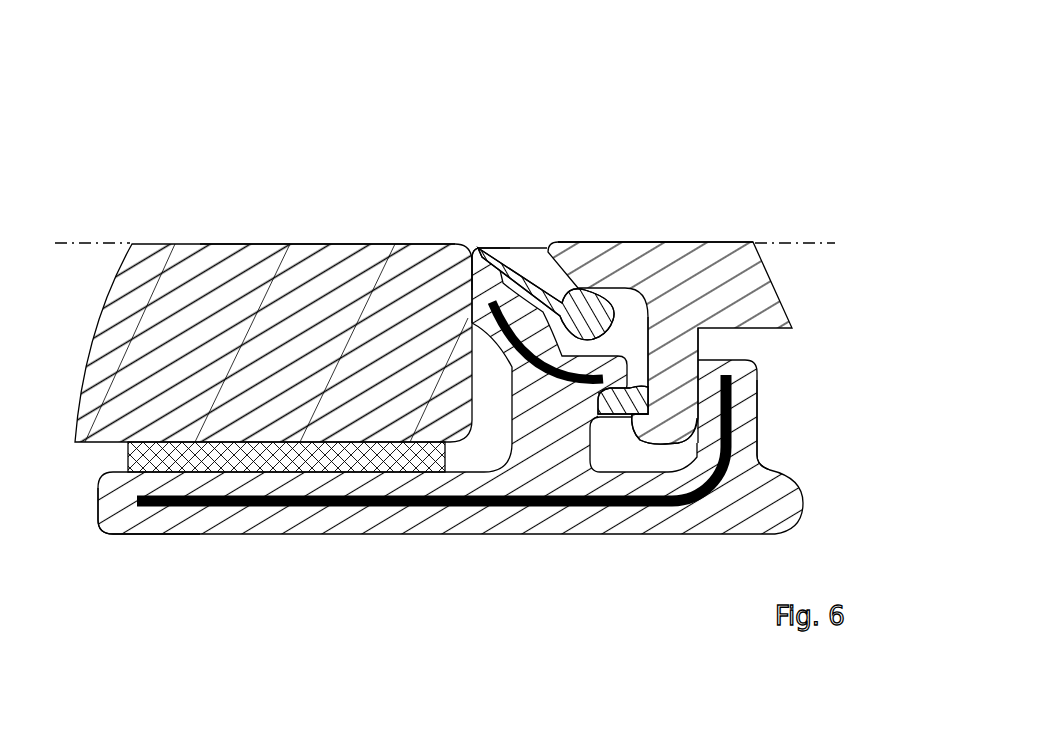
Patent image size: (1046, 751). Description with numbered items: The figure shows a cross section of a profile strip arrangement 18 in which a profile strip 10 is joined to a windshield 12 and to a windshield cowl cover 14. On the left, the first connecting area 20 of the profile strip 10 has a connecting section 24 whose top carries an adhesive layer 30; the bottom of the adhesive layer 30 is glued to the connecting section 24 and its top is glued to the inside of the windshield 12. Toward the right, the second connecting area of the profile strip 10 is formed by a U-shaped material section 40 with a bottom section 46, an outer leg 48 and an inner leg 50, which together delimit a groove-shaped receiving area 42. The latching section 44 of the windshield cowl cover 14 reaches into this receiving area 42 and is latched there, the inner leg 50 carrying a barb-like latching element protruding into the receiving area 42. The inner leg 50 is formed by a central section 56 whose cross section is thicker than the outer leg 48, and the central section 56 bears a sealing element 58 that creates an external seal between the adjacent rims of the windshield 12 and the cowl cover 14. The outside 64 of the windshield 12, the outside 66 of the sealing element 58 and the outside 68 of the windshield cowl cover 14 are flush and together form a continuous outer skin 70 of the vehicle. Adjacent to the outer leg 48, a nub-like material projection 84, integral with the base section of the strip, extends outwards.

The profile strip 10 is at (380, 577).
The windshield 12 is at (267, 221).
The windshield cowl cover 14 is at (703, 213).
The profile strip arrangement 18 is at (606, 89).
The first connecting area 20 is at (152, 582).
The connecting section 24 is at (246, 518).
The adhesive layer 30 is at (130, 458).
The U-shaped material section 40 is at (787, 396).
The groove-shaped receiving area 42 is at (630, 457).
The latching section 44 is at (675, 458).
The bottom section 46 is at (667, 412).
The outer leg 48 is at (745, 432).
The inner leg 50 is at (585, 425).
The central section 56 is at (549, 407).
The sealing element 58 is at (513, 248).
The outside of the windshield 64 is at (373, 243).
The outside of the sealing element 66 is at (490, 241).
The outside of the windshield cowl cover 68 is at (618, 241).
The continuous outer skin 70 is at (822, 243).
The material projection 84 is at (782, 502).